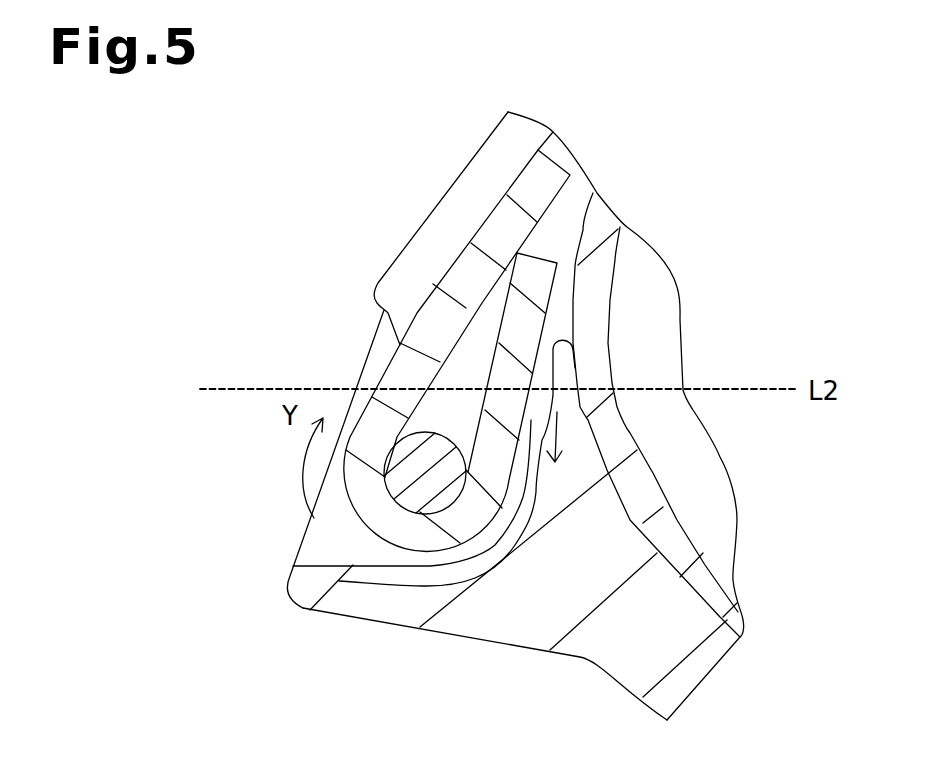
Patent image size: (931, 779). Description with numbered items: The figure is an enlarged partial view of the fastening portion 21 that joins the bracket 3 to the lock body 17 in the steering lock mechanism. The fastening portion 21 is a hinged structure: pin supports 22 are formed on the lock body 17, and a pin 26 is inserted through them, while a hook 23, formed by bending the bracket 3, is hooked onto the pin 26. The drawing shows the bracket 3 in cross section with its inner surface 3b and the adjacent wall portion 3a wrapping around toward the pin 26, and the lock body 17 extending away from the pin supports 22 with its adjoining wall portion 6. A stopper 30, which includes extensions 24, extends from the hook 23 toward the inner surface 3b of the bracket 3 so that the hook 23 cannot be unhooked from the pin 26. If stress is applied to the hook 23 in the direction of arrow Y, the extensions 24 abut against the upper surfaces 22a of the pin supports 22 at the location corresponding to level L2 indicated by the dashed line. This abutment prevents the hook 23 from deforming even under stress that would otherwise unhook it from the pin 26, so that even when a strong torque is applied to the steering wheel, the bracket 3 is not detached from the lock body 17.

The bracket 3 is at (450, 326).
The inner layer of wall 3a is at (384, 366).
The inner surface 3b is at (436, 283).
The side wall portion 6 is at (603, 220).
The lock body 17 is at (603, 708).
The fastening portion 21 is at (259, 602).
The pin supports 22 is at (315, 540).
The upper surfaces 22a is at (455, 392).
The hook 23 is at (387, 522).
The extensions 24 is at (537, 290).
The pin 26 is at (434, 450).
The stopper 30 is at (540, 348).